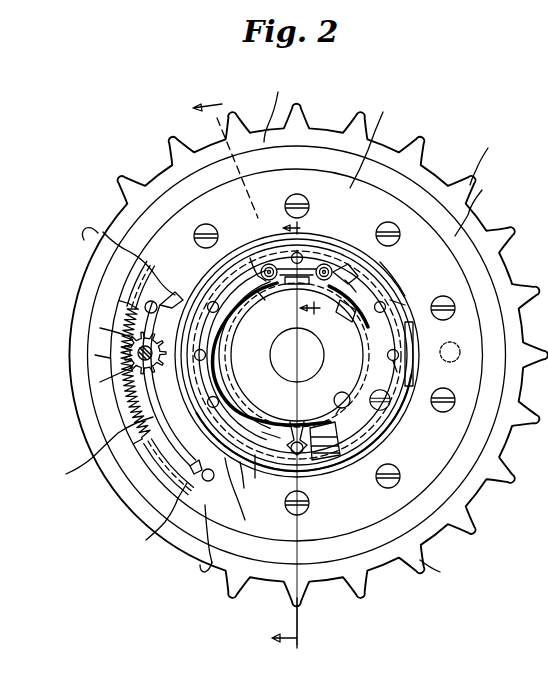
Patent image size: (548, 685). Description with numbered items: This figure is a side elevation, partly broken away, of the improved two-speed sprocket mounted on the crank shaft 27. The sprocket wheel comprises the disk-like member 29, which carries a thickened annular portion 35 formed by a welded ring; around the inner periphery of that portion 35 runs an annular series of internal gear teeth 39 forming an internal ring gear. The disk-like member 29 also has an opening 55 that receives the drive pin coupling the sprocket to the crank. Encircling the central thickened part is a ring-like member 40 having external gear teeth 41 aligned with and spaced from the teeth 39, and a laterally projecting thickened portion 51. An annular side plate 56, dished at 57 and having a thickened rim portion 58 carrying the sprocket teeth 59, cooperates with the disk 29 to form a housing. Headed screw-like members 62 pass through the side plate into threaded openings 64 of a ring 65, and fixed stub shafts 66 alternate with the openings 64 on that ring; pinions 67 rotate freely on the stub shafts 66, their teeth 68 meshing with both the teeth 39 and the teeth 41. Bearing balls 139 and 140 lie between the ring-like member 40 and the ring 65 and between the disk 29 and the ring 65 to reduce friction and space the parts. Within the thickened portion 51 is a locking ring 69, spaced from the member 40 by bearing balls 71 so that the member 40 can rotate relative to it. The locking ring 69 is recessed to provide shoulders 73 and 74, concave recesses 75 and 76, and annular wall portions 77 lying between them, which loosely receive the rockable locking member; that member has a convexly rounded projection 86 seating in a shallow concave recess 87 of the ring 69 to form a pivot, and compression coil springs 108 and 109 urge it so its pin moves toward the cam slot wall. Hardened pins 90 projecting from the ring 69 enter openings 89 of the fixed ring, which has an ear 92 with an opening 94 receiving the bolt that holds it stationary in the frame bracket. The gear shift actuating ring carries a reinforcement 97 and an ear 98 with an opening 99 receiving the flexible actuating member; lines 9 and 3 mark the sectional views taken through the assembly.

The crank shaft 27 is at (547, 92).
The disk-like member 29 is at (90, 398).
The dished portion 57 is at (470, 212).
The sprocket teeth 59 is at (486, 150).
The annular side plate 56 is at (378, 130).
The thickened rim portion 58 is at (279, 94).
The internal gear teeth 39 is at (113, 300).
The bearing balls 140 is at (162, 523).
The ring 65 is at (228, 482).
The bearing balls 139 is at (244, 488).
The bearing balls 71 is at (258, 470).
The ring-like member 40 is at (178, 408).
The threaded openings 64 is at (151, 300).
The gear teeth 41 is at (176, 284).
The stub shafts 66 is at (146, 362).
The pinions 67 is at (100, 328).
The thickened annular portion 35 is at (98, 358).
The teeth 68 is at (100, 382).
The locking ring 69 is at (207, 334).
The compression coil spring 108 is at (258, 296).
The reinforcement 97 is at (330, 298).
The section line 9 is at (307, 432).
The section line 3 is at (246, 375).
The hardened pins 90 is at (205, 358).
The openings 89 is at (393, 366).
The convexly rounded projection 86 is at (300, 420).
The shallow concave recess 87 is at (320, 442).
The opening 55 is at (342, 406).
The thickened portion 51 is at (272, 431).
The annular wall portions 77 is at (265, 263).
The concave recess 75 is at (270, 262).
The shoulder 73 is at (250, 255).
The concave recess 76 is at (329, 264).
The compression coil spring 109 is at (330, 272).
The shoulder 74 is at (352, 274).
The ear 98 is at (400, 290).
The opening 99 is at (400, 300).
The headed screw-like members 62 is at (218, 210).
The ear 92 is at (443, 318).
The opening 94 is at (450, 352).